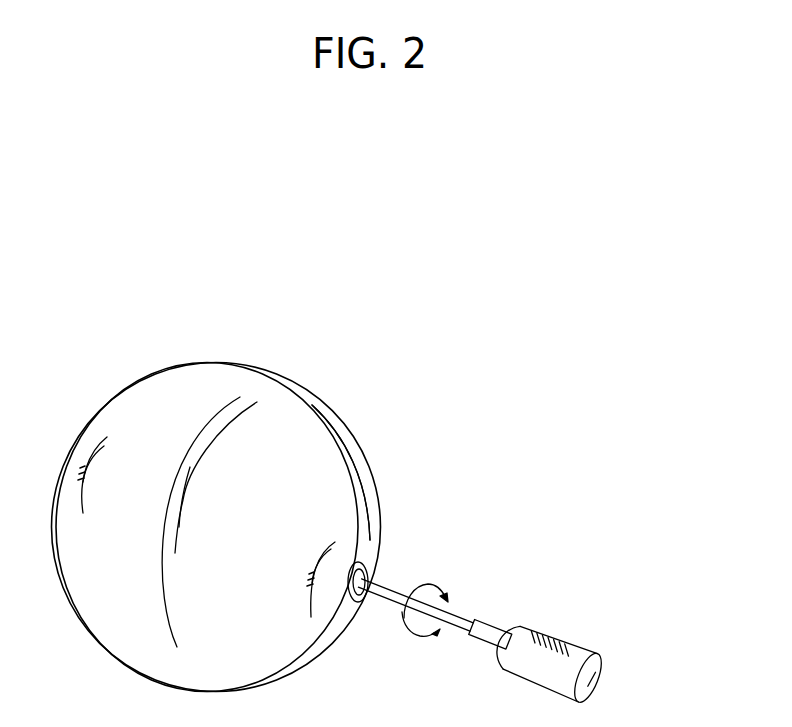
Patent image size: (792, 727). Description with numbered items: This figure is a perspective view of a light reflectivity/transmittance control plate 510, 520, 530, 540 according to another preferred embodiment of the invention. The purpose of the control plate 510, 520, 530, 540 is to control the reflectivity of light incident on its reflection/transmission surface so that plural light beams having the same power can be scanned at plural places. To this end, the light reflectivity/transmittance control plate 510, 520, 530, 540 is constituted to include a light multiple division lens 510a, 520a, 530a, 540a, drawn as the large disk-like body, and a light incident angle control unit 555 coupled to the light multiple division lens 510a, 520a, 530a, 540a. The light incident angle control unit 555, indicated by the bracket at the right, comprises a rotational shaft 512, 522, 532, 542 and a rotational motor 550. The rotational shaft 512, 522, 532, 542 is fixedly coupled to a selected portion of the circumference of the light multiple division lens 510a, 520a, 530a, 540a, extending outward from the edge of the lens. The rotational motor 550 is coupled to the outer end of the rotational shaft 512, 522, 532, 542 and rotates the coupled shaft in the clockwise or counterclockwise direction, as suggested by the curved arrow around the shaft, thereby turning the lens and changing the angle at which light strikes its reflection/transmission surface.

The light reflectivity/transmittance control plate 510 is at (284, 453).
The light reflectivity/transmittance control plate 520 is at (284, 453).
The light reflectivity/transmittance control plate 530 is at (284, 453).
The light reflectivity/transmittance control plate 540 is at (290, 328).
The light multiple division lens 510a is at (476, 461).
The light multiple division lens 520a is at (476, 461).
The light multiple division lens 530a is at (476, 461).
The light multiple division lens 540a is at (295, 415).
The rotational shaft 512 is at (511, 576).
The rotational shaft 522 is at (511, 576).
The rotational shaft 532 is at (511, 576).
The rotational shaft 542 is at (387, 582).
The rotational motor 550 is at (580, 642).
The light incident angle control unit 555 is at (680, 512).